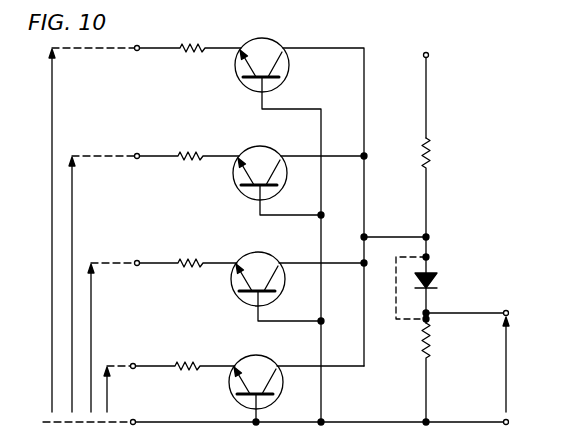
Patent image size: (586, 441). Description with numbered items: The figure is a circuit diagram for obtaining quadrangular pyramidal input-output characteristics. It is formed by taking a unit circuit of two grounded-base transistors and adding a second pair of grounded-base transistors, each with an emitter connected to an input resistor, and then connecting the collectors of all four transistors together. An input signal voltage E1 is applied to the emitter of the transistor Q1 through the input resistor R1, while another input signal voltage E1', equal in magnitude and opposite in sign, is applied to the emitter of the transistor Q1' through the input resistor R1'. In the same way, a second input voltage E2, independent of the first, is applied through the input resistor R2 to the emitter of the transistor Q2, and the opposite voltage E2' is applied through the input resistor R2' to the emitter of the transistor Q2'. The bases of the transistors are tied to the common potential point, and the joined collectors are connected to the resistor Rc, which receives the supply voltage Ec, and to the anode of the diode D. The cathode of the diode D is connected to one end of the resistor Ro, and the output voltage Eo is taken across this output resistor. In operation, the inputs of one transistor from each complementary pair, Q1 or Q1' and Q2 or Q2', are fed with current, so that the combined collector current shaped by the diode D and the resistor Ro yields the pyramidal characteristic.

The input signal voltage E1 is at (64, 230).
The input signal voltage E1' is at (85, 284).
The input voltage E2 is at (102, 338).
The input voltage E2' is at (121, 389).
The output voltage Eo is at (518, 364).
The collector supply voltage Ec is at (430, 86).
The input resistor R1 is at (191, 69).
The input resistor R1' is at (190, 139).
The input resistor R2 is at (189, 245).
The input resistor R2' is at (186, 351).
The transistor Q1 is at (293, 230).
The transistor Q1' is at (292, 184).
The transistor Q2 is at (291, 293).
The transistor Q2' is at (278, 388).
The resistor Rc is at (432, 141).
The diode D is at (440, 284).
The resistor Ro is at (432, 341).